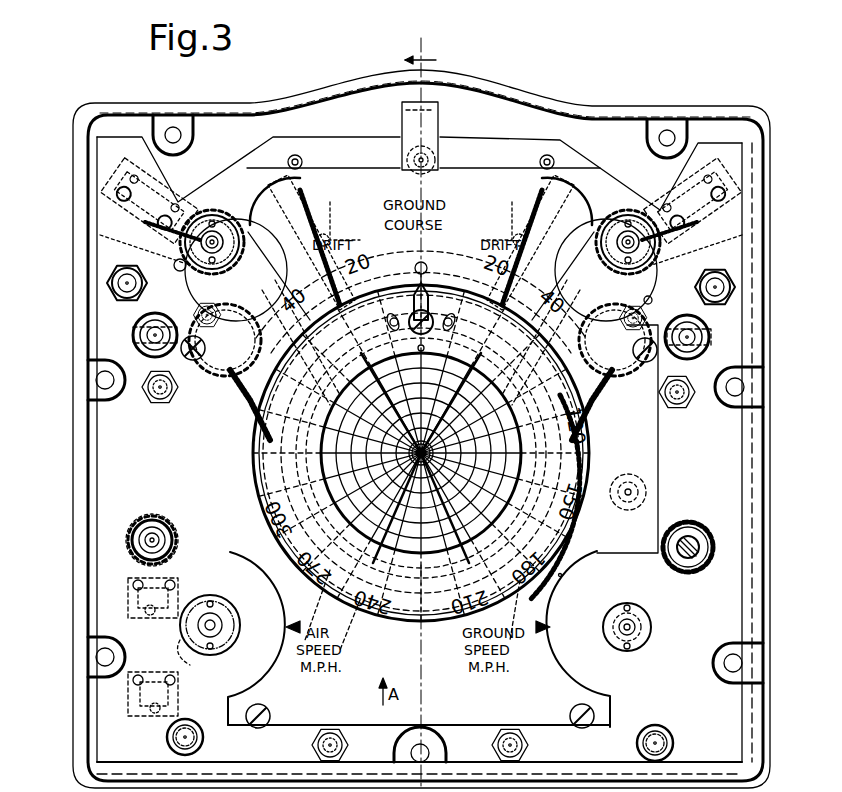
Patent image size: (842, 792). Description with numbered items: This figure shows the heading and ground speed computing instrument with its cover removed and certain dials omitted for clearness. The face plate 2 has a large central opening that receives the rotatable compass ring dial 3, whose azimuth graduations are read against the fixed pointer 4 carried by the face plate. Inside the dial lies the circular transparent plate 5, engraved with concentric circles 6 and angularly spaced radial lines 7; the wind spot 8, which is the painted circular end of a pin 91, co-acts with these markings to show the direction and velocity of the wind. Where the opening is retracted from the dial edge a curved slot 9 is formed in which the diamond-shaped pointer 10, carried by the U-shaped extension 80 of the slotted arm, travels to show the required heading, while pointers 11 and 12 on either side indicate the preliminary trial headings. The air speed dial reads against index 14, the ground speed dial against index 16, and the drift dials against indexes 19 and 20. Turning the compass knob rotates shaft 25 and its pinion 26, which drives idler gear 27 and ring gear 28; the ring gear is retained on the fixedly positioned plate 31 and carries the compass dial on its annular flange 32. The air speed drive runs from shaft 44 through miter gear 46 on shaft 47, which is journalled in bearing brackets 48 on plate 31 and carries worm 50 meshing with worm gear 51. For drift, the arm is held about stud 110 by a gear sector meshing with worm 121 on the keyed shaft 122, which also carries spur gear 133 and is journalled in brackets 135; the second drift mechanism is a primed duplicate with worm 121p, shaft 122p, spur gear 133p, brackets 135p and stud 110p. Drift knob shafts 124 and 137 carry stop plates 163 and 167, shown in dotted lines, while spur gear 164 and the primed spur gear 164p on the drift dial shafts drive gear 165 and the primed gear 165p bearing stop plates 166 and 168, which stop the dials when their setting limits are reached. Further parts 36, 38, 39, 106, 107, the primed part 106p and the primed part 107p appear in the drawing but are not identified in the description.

The face plate 2 is at (355, 735).
The compass ring dial 3 is at (353, 610).
The fixed pointer 4 is at (433, 266).
The circular central transparent plate 5 is at (425, 50).
The concentric circles 6 is at (556, 575).
The radial lines 7 is at (555, 497).
The movable spot 8 is at (421, 458).
The curved slot 9 is at (408, 283).
The diamond-shaped pointer 10 is at (430, 313).
The pointer 11 is at (301, 332).
The pointer 12 is at (541, 337).
The index 14 is at (291, 620).
The index 16 is at (548, 620).
The index 19 is at (233, 242).
The index 20 is at (608, 242).
The shaft 25 is at (722, 525).
The pinion 26 is at (700, 550).
The idler gear 27 is at (685, 492).
The ring gear 28 is at (575, 545).
The fixedly positioned plate 31 is at (728, 593).
The annular flange 32 is at (268, 528).
The gear 36 is at (152, 525).
The ring 38 is at (135, 527).
The gear teeth 39 is at (152, 526).
The shaft 44 is at (132, 540).
The miter gear 46 is at (140, 552).
The shaft 47 is at (168, 738).
The bearing bracket 48 is at (139, 647).
The worm 50 is at (198, 598).
The worm gear 51 is at (196, 665).
The U-shaped extension 80 is at (440, 118).
The pin 91 is at (443, 455).
The drift slide 106 is at (300, 200).
The drift slide 106p is at (542, 200).
The drift link 107 is at (330, 210).
The drift link 107p is at (512, 210).
The stud 110 is at (226, 339).
The gear 110p is at (608, 340).
The worm 121 is at (245, 415).
The rack 121p is at (600, 415).
The shaft 122 is at (150, 262).
The shaft 122p is at (735, 275).
The shaft 124 is at (133, 320).
The spur gear 133 is at (135, 238).
The spur gear 133p is at (720, 240).
The brackets 135 is at (120, 200).
The bracket 135p is at (720, 220).
The shaft 137 is at (700, 325).
The stop plate 163 is at (120, 336).
The spur gear 164 is at (248, 169).
The spur gear 164p is at (591, 173).
The spur gear 165 is at (140, 279).
The gear 165p is at (671, 287).
The stop plate 166 is at (202, 360).
The stop plate 167 is at (715, 340).
The stop plate 168 is at (635, 362).